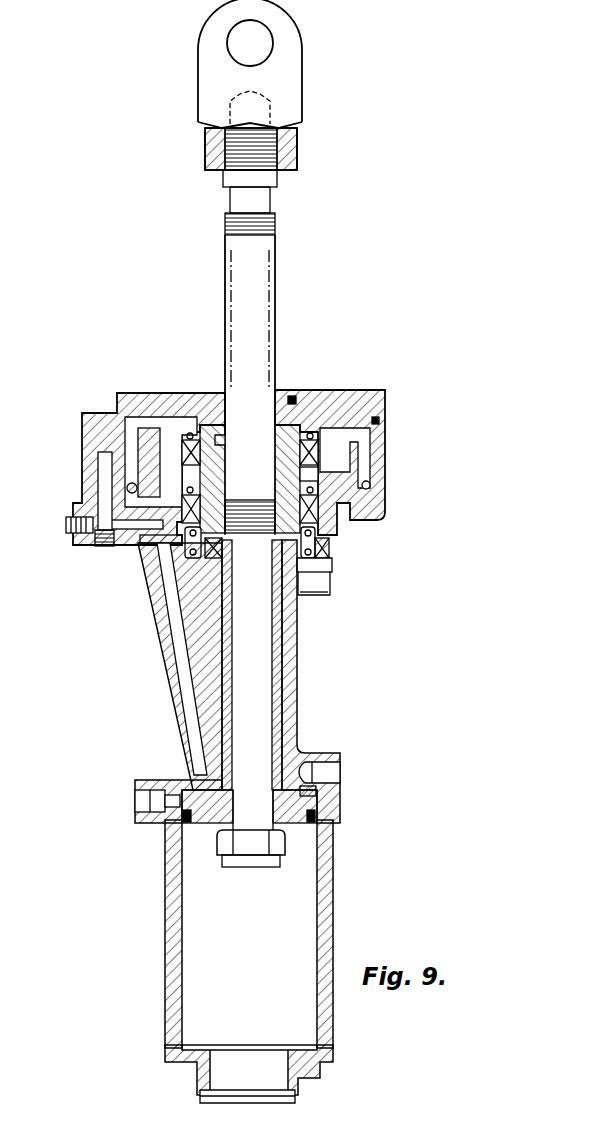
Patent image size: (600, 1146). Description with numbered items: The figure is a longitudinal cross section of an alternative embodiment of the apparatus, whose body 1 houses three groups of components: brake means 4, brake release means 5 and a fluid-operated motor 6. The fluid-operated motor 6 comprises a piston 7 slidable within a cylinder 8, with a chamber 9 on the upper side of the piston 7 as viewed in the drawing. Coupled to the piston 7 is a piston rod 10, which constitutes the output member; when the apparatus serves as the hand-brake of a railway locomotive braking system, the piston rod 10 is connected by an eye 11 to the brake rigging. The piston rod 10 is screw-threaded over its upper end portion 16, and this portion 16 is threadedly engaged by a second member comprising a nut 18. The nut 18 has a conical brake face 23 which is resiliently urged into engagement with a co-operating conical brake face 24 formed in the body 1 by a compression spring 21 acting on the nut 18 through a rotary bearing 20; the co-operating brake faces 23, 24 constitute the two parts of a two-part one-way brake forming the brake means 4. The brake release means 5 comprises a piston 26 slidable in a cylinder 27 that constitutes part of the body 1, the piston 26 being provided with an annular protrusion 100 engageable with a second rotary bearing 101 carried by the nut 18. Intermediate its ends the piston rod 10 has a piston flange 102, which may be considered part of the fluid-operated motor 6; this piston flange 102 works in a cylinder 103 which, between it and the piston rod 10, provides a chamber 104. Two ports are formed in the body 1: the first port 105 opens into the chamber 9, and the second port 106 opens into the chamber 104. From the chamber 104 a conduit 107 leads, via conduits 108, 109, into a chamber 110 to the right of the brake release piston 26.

The eye 11 is at (290, 58).
The screw-threaded upper end portion 16 is at (270, 278).
The brake release means 5 is at (173, 410).
The brake means 4 is at (168, 460).
The cylinder 27 is at (376, 440).
The piston 26 is at (372, 410).
The annular protrusion 100 is at (190, 424).
The chamber 110 is at (128, 448).
The conduit 109 is at (104, 477).
The conduit 108 is at (140, 545).
The conical brake face 23 is at (186, 482).
The rotary bearing 20 is at (195, 500).
The second rotary bearing 101 is at (196, 452).
The co-operating conical brake face 24 is at (312, 478).
The nut 18 is at (305, 492).
The piston flange 102 is at (215, 556).
The compression spring 21 is at (313, 562).
The cylinder 103 is at (215, 636).
The conduit 107 is at (180, 652).
The body 1 is at (160, 683).
The piston rod 10 is at (262, 620).
The chamber 104 is at (284, 668).
The second port 106 is at (342, 776).
The piston 7 is at (190, 826).
The first port 105 is at (140, 790).
The chamber 9 is at (207, 803).
The cylinder 8 is at (170, 900).
The fluid-operated motor 6 is at (342, 890).